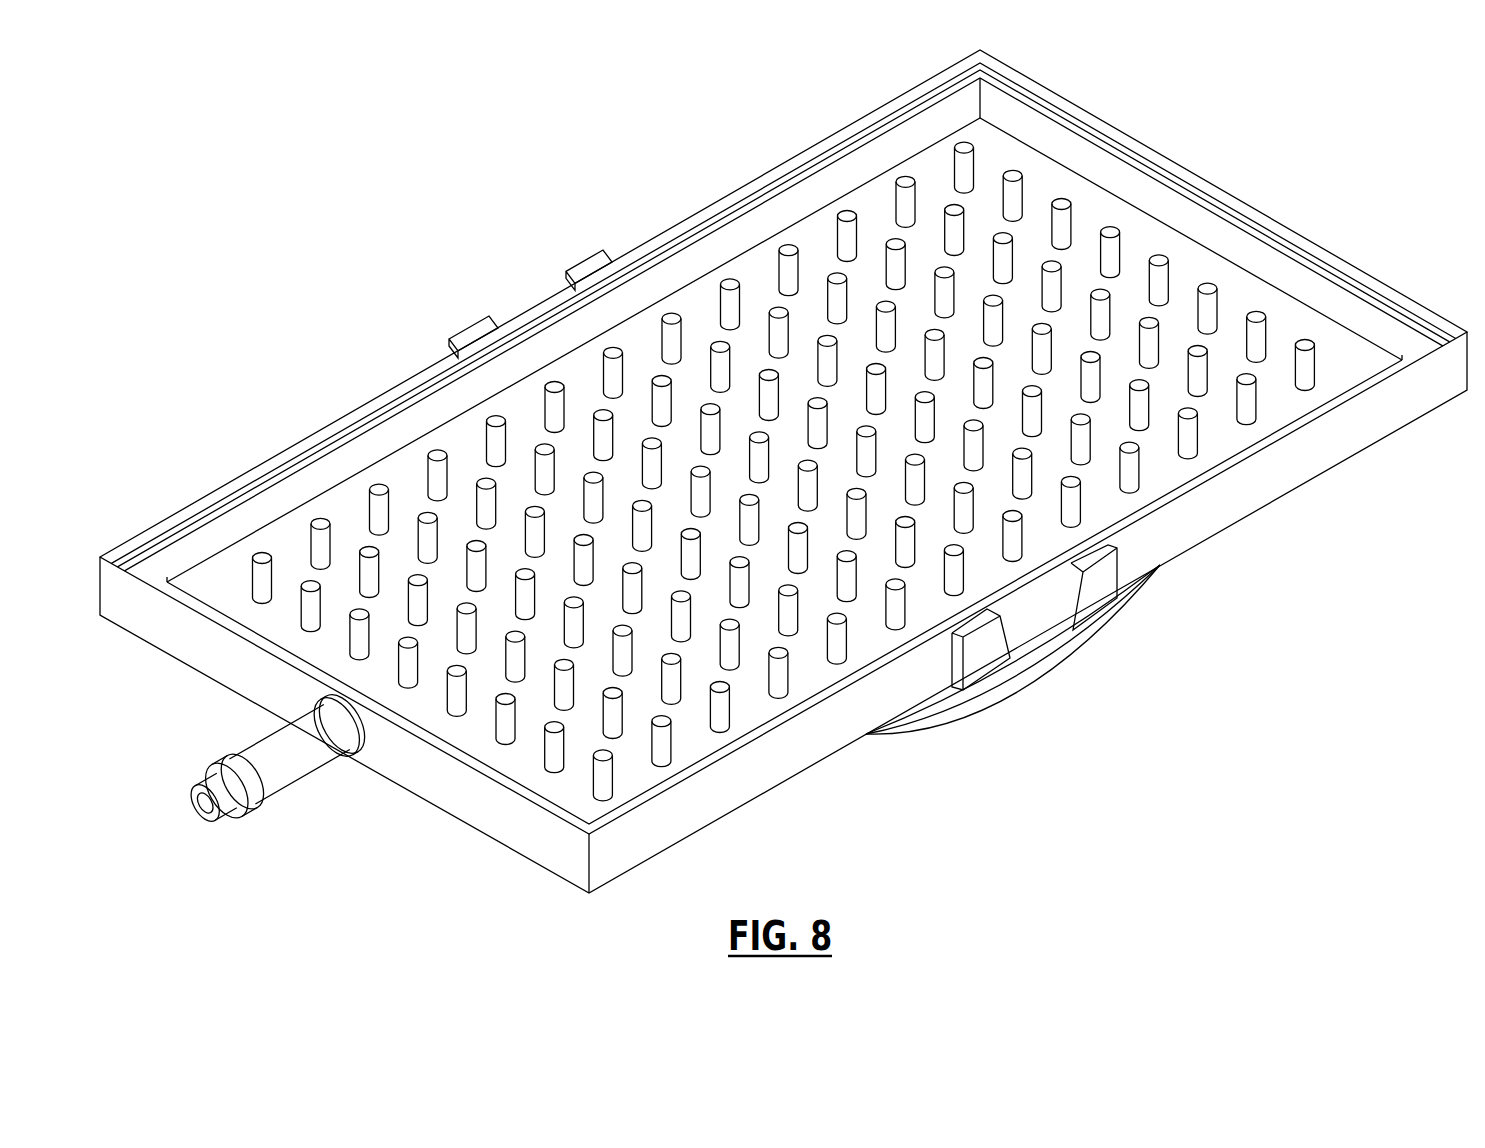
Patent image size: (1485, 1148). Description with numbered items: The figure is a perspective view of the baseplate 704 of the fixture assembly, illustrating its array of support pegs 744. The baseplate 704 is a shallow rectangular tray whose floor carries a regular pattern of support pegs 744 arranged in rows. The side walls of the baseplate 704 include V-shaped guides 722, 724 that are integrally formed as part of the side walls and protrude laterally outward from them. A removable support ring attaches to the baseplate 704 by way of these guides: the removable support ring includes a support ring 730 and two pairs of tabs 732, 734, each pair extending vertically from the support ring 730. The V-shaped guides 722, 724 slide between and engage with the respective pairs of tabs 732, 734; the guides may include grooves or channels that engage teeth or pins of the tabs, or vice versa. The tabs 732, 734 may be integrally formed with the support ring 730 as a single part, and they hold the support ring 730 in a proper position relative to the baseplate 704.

The baseplate 704 is at (1262, 490).
The V-shaped guide 722 is at (1055, 623).
The V-shaped guide 724 is at (545, 300).
The support ring 730 is at (1055, 672).
The pair of tabs 732 is at (1100, 585).
The pair of tabs 734 is at (473, 338).
The array of support pegs 744 is at (437, 456).